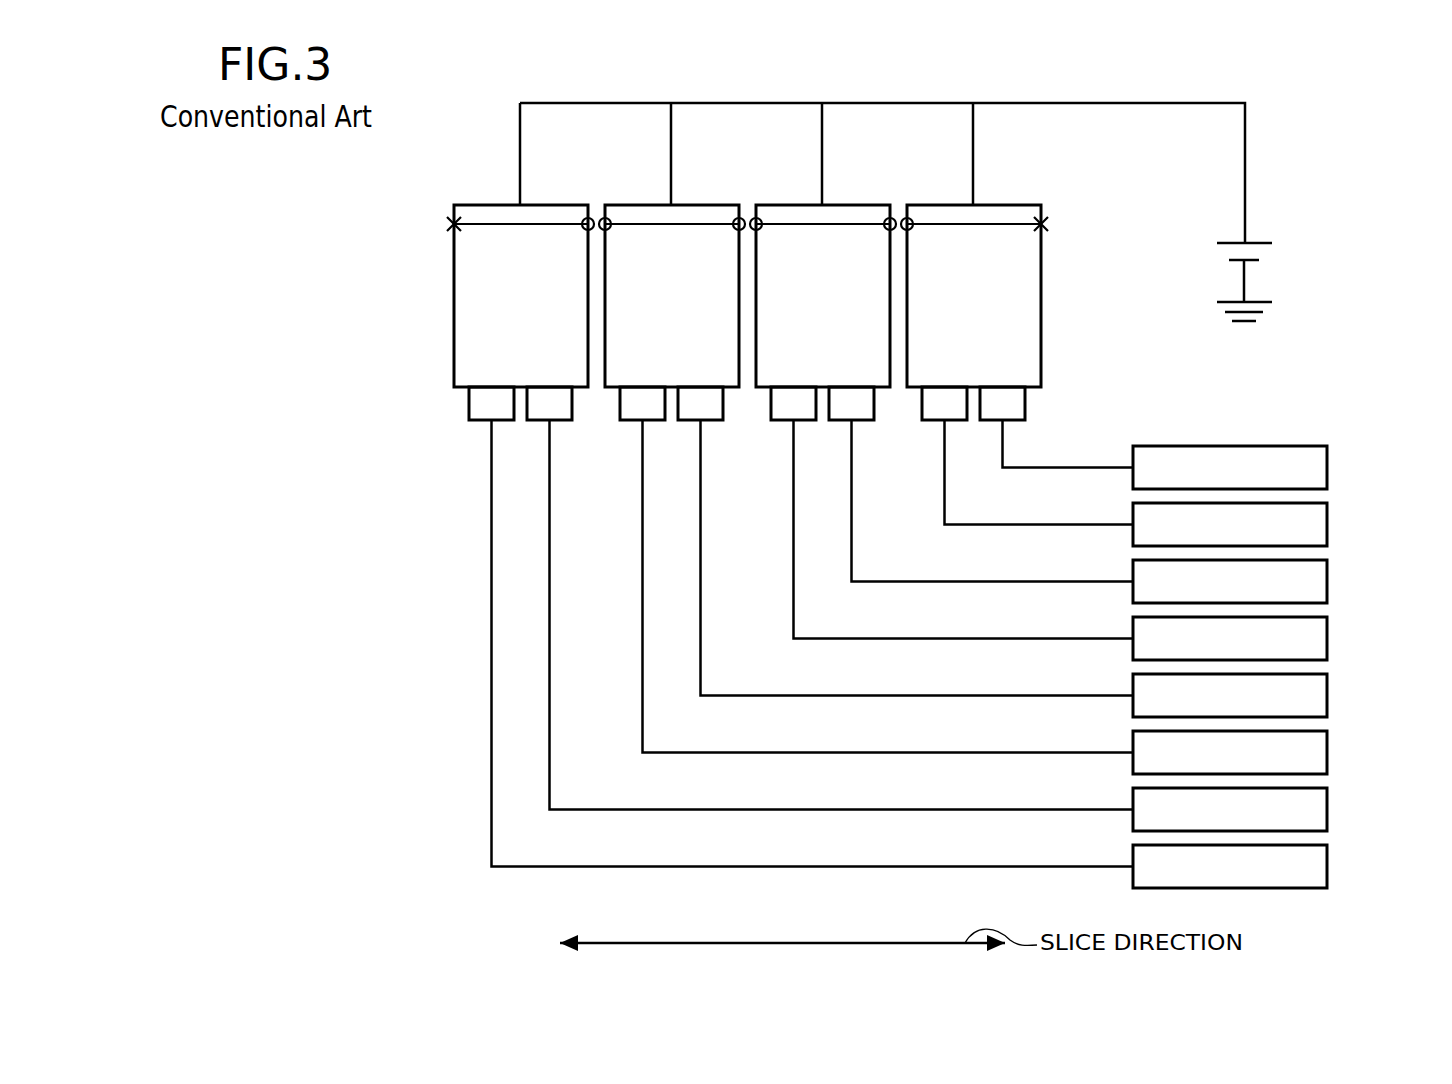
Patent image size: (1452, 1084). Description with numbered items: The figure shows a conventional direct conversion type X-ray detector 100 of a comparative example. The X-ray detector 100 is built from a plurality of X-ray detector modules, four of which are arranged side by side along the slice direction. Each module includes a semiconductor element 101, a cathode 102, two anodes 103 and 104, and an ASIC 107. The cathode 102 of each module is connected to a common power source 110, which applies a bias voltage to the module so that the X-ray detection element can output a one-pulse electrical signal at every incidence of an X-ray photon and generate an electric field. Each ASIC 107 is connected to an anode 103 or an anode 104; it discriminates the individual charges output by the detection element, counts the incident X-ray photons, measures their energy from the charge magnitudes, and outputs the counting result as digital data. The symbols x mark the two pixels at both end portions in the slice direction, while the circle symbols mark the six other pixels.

The X-ray detector 100 is at (1356, 90).
The semiconductor element 101 is at (463, 387).
The cathode 102 is at (468, 205).
The anode 103 is at (483, 420).
The anode 104 is at (538, 420).
The ASIC 107 is at (953, 654).
The power source 110 is at (1260, 242).